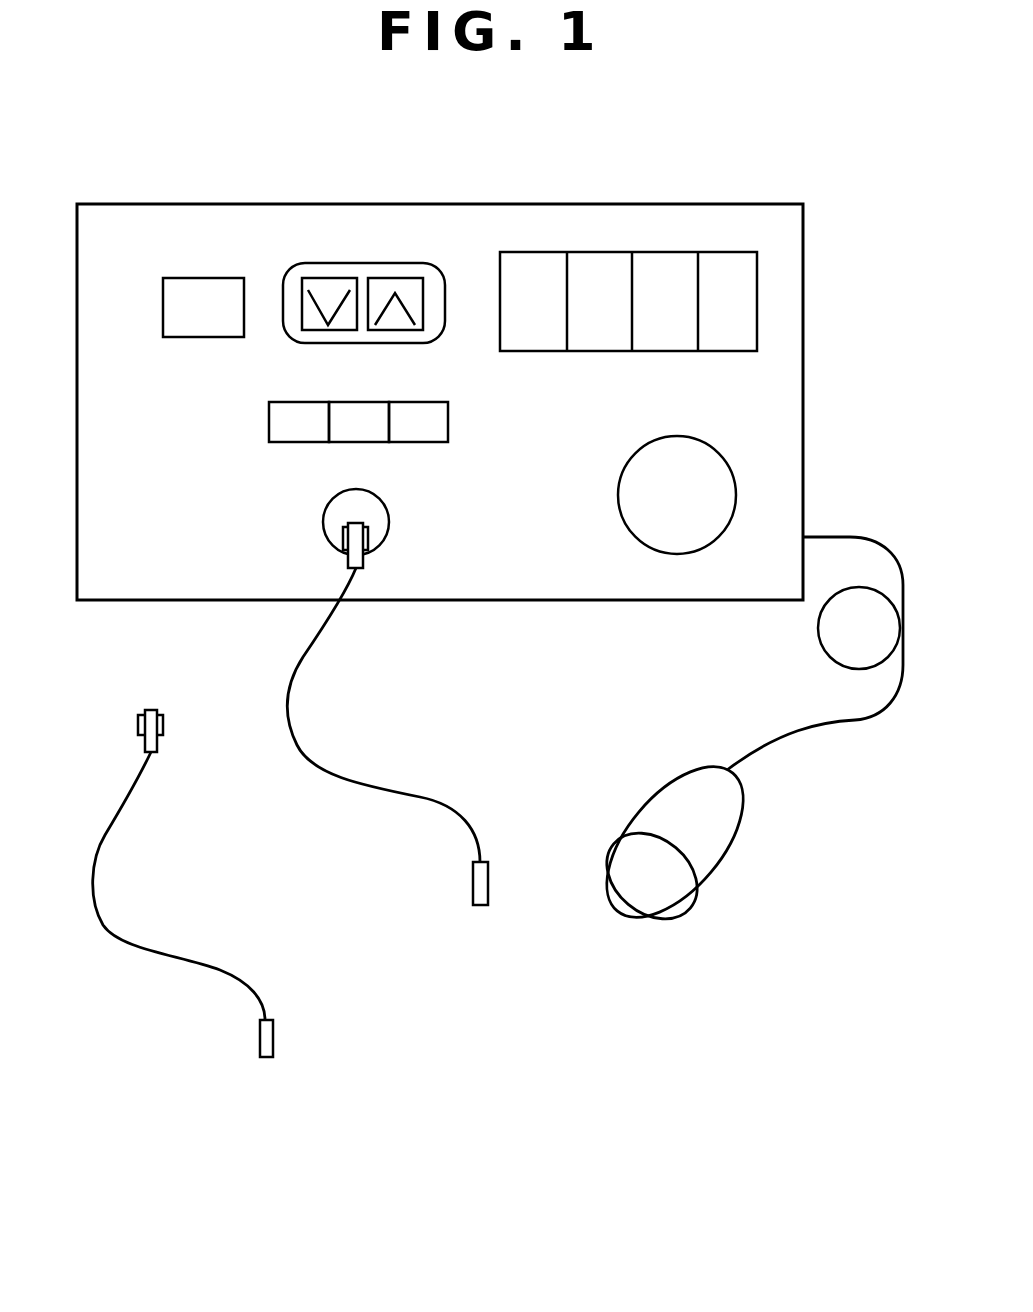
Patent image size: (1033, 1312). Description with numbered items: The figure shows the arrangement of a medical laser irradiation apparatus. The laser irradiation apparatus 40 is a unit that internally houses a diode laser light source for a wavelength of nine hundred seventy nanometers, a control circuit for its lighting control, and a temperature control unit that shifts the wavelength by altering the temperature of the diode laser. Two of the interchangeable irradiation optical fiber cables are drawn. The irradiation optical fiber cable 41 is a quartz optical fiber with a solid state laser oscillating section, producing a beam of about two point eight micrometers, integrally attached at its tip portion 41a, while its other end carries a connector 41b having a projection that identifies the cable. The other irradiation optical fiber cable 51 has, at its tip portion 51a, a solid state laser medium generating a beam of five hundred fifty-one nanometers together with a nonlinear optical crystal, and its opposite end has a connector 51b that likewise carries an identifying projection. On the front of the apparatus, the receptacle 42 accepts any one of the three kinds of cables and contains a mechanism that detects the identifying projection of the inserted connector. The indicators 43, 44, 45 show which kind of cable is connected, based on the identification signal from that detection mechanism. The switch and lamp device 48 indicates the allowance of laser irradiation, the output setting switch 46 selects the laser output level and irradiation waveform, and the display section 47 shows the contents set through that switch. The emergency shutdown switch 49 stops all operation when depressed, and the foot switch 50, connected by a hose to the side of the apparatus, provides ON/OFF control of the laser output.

The laser irradiation apparatus 40 is at (733, 204).
The irradiation optical fiber cable 41 is at (292, 697).
The tip portion 41a is at (473, 890).
The connector 41b is at (345, 558).
The receptacle 42 is at (325, 510).
The indicator 43 is at (301, 417).
The indicator 44 is at (360, 417).
The indicator 45 is at (420, 417).
The output setting switch 46 is at (362, 263).
The display section 47 is at (617, 252).
The switch and lamp device 48 is at (203, 278).
The emergency shutdown switch 49 is at (737, 482).
The foot switch 50 is at (717, 880).
The irradiation optical fiber cable 51 is at (95, 873).
The tip portion 51a is at (260, 1050).
The connector 51b is at (148, 745).